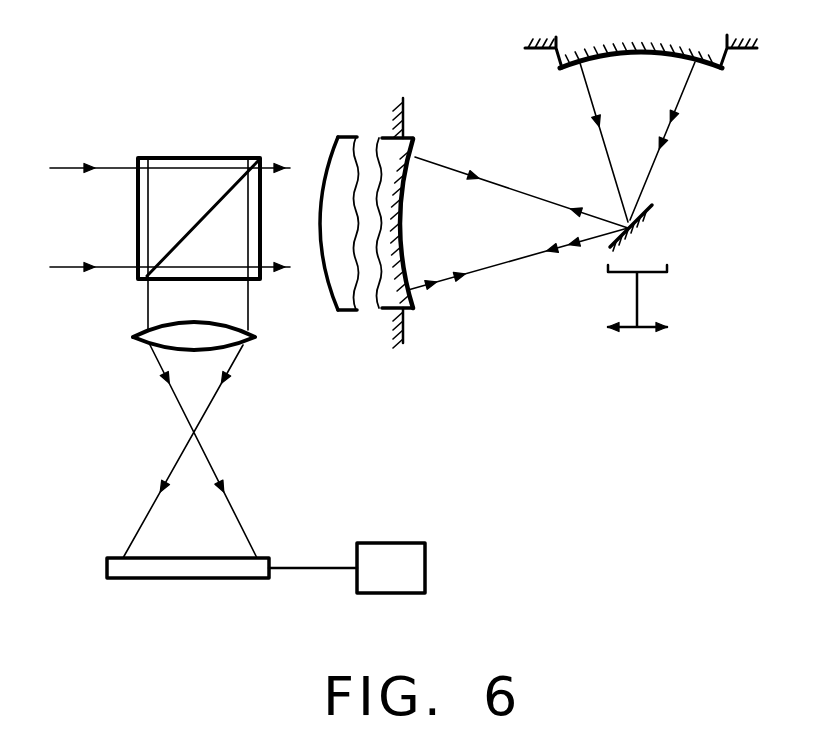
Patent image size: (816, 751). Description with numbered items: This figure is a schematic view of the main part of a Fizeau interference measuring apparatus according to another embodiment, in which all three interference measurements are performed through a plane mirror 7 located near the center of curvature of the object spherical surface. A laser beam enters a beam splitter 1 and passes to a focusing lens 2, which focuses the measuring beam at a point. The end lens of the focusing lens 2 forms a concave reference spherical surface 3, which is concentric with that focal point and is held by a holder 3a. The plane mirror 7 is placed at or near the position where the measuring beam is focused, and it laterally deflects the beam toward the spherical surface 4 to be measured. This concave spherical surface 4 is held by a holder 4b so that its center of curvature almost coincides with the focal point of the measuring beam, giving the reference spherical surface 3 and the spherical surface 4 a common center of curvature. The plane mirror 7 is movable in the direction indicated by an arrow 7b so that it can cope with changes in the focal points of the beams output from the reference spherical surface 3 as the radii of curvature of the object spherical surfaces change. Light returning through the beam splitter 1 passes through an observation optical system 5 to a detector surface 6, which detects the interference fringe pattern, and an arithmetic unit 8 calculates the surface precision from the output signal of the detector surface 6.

The beam splitter 1 is at (216, 197).
The focusing lens 2 is at (315, 345).
The reference spherical surface 3 is at (410, 178).
The holder 3a is at (405, 126).
The spherical surface to be measured 4 is at (684, 62).
The holder 4b is at (531, 50).
The observation optical system 5 is at (93, 573).
The detector surface 6 is at (187, 565).
The plane mirror 7 is at (648, 224).
The arrow 7b is at (633, 330).
The arithmetic unit 8 is at (387, 578).